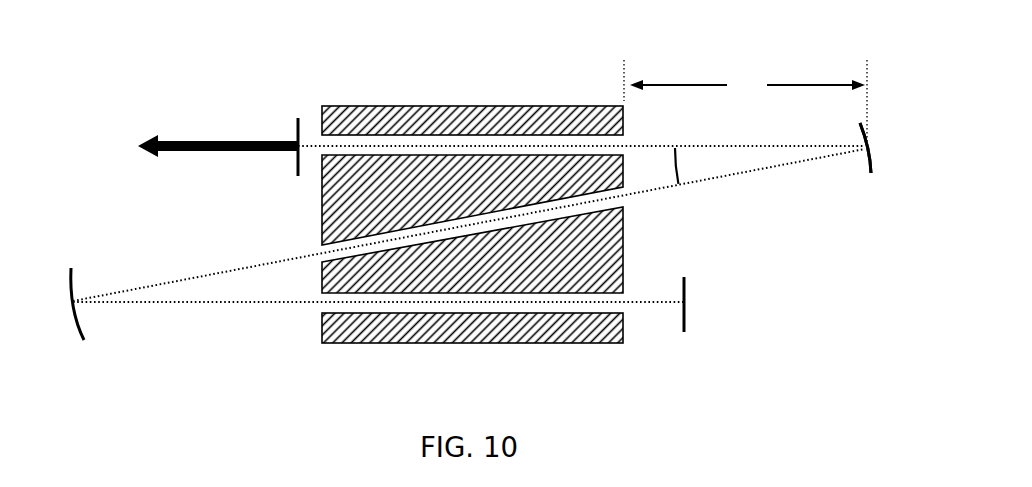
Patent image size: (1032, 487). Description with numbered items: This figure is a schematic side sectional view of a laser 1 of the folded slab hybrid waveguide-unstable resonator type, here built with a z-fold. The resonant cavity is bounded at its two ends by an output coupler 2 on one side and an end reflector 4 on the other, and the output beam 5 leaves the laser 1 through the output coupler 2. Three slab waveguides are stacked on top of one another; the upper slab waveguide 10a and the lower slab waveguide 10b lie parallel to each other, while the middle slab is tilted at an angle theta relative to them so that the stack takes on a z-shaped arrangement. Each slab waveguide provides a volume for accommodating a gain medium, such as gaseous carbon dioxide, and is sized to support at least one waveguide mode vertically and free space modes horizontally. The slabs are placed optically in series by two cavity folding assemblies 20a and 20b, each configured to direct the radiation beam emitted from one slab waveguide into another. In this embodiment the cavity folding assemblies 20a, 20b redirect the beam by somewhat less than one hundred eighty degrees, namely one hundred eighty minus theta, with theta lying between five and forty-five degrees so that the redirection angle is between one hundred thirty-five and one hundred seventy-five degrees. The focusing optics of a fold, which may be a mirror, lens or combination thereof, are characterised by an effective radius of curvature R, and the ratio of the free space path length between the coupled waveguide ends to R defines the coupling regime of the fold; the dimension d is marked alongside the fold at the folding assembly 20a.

The laser 1 is at (441, 88).
The output coupler 2 is at (269, 130).
The end reflector 4 is at (709, 320).
The output beam 5 is at (218, 117).
The slab waveguide 10a is at (472, 96).
The slab waveguide 10b is at (427, 339).
The cavity folding assembly 20a is at (834, 179).
The cavity folding assembly 20b is at (115, 279).
The effective radius of curvature R is at (832, 135).
The distance d is at (745, 100).